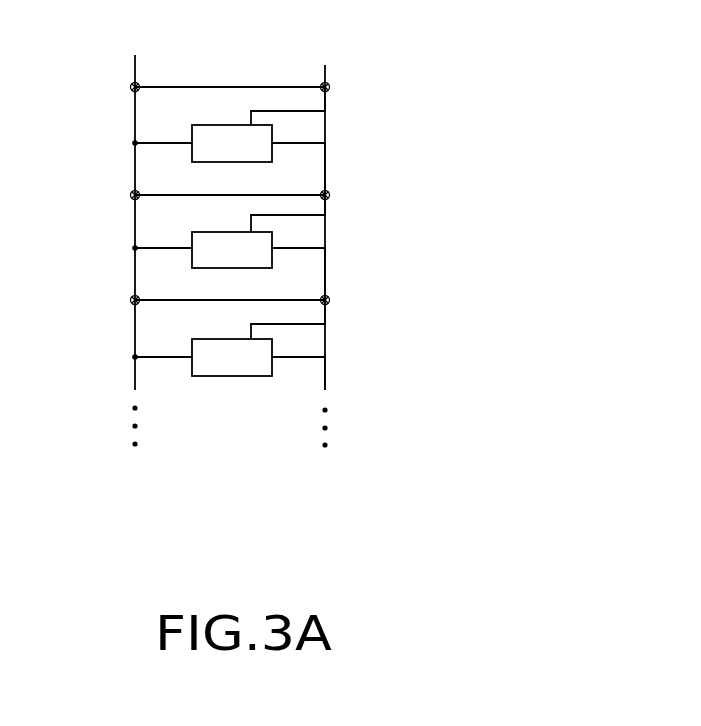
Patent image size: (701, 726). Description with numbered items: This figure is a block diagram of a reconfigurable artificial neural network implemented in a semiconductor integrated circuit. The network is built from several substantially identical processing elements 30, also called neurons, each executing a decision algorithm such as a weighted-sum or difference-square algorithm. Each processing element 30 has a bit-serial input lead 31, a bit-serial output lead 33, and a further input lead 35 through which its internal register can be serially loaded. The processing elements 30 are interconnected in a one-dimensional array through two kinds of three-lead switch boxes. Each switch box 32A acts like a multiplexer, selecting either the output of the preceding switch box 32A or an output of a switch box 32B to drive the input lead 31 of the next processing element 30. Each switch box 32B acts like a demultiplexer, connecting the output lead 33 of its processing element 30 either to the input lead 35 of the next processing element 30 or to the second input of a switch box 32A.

The processing element 30 is at (227, 162).
The bit-serial input lead 31 is at (158, 142).
The switch box 32A is at (140, 81).
The switch box 32B is at (330, 84).
The bit-serial output lead 33 is at (305, 143).
The input lead 35 is at (255, 118).